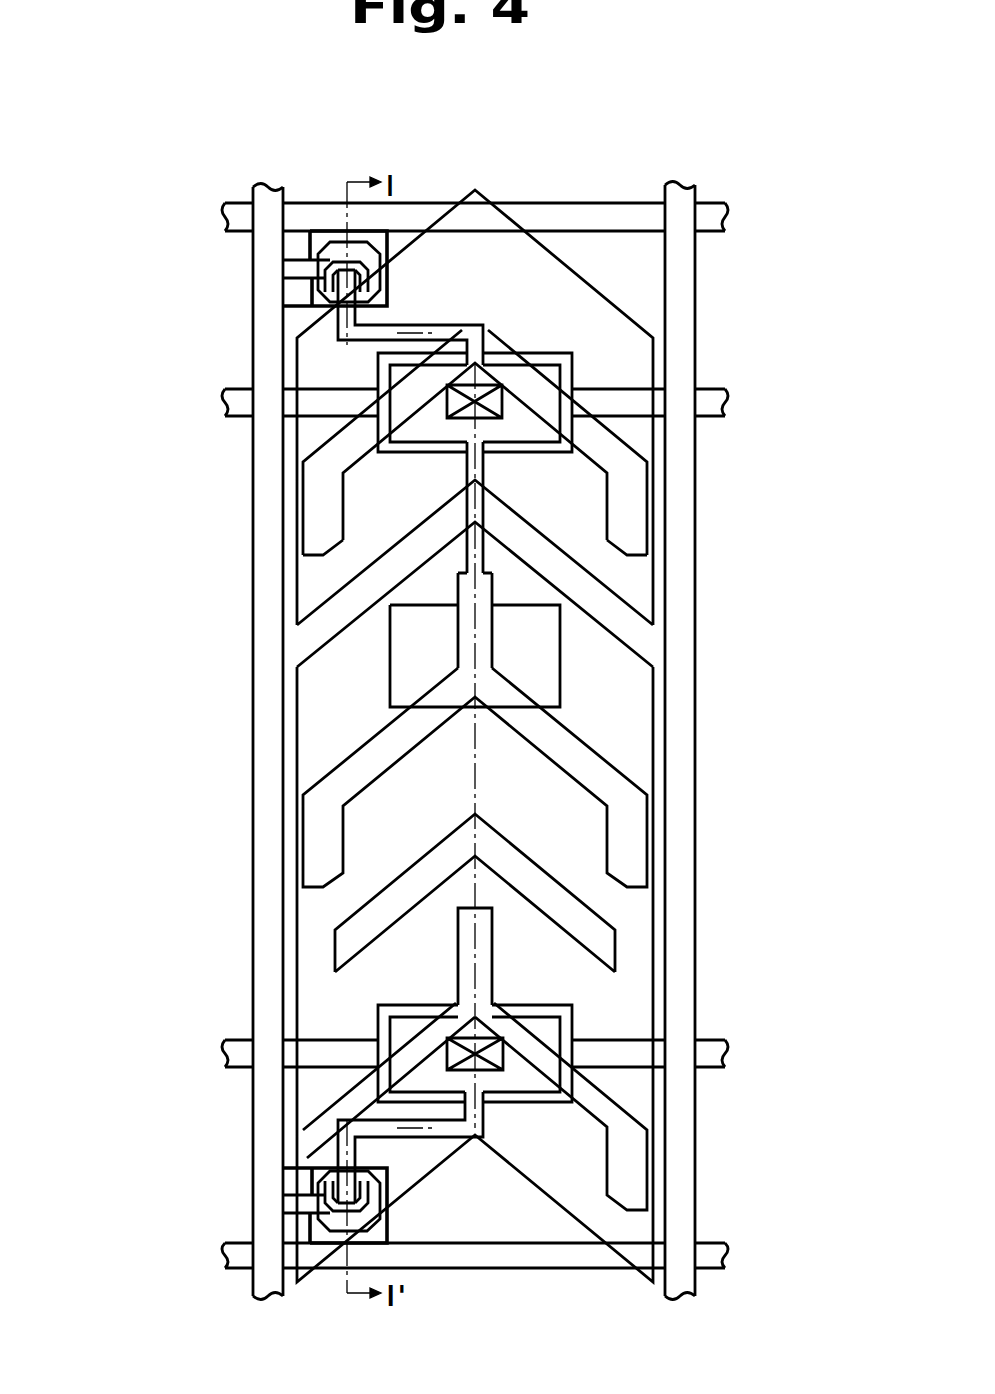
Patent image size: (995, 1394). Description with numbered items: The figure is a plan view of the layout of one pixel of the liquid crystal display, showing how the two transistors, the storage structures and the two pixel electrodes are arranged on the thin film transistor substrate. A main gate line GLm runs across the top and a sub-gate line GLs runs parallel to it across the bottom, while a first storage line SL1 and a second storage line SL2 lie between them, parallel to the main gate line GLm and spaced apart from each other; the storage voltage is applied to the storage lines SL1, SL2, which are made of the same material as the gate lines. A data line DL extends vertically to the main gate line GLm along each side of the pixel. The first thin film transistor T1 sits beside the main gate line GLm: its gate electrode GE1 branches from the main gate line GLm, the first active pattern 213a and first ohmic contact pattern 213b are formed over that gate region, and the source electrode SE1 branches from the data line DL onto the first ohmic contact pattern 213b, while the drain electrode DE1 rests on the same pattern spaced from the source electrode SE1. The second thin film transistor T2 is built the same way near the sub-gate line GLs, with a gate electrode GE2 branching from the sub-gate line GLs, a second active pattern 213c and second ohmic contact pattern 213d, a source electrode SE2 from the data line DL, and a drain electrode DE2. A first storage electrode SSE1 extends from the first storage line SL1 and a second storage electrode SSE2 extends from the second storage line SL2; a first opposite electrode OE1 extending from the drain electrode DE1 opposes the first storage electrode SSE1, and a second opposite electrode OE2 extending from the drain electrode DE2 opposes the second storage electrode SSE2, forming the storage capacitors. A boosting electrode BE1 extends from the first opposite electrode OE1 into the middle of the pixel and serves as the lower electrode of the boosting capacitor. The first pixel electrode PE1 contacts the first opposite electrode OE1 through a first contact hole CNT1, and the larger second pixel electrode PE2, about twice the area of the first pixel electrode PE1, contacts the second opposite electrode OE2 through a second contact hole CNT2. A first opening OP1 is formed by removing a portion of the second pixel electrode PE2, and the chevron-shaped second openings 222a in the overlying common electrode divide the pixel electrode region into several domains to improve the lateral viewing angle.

The data line DL is at (264, 188).
The main gate line GLm is at (230, 218).
The sub-gate line GLs is at (230, 1256).
The first storage line SL1 is at (713, 401).
The second storage line SL2 is at (713, 1050).
The first thin film transistor T1 is at (252, 308).
The second thin film transistor T2 is at (252, 1167).
The source electrode SE1 is at (297, 266).
The source electrode SE2 is at (297, 1206).
The gate electrode GE1 is at (311, 293).
The gate electrode GE2 is at (308, 1165).
The drain electrode DE1 is at (338, 306).
The drain electrode DE2 is at (340, 1128).
The first active pattern 213a is at (231, 280).
The first ohmic contact pattern 213b is at (318, 283).
The second active pattern 213c is at (231, 1193).
The second ohmic contact pattern 213d is at (318, 1190).
The first contact hole CNT1 is at (446, 403).
The second contact hole CNT2 is at (446, 1053).
The first opposite electrode OE1 is at (407, 443).
The second opposite electrode OE2 is at (545, 1097).
The first pixel electrode PE1 is at (297, 580).
The second pixel electrode PE2 is at (297, 746).
The first storage electrode SSE1 is at (558, 342).
The second storage electrode SSE2 is at (553, 1004).
The second opening 222a is at (630, 499).
The boosting electrode BE1 is at (540, 657).
The first opening OP1 is at (607, 936).